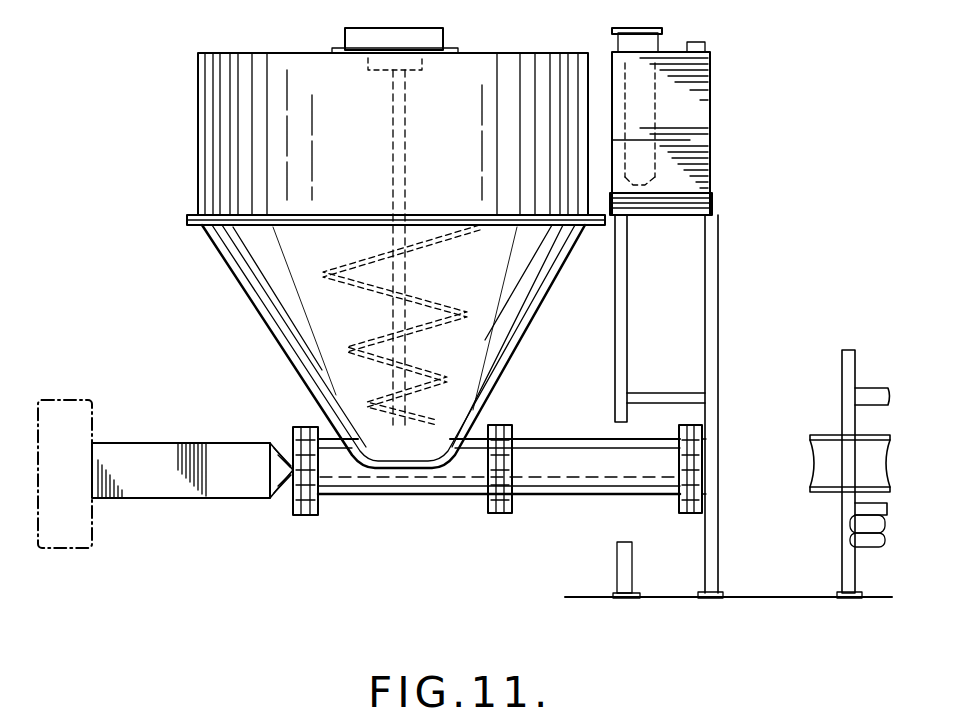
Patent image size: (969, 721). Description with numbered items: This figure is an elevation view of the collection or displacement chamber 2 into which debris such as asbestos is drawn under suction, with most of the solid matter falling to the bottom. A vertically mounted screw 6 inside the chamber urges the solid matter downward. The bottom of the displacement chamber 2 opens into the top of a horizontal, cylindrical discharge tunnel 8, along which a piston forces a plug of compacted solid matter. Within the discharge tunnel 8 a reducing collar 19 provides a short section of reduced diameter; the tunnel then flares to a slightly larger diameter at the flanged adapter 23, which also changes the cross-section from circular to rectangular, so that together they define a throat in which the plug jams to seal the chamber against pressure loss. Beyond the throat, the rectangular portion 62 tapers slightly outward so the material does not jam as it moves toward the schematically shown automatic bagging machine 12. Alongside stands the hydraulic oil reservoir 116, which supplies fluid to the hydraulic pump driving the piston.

The displacement chamber 2 is at (268, 338).
The vertically mounted screw 6 is at (427, 326).
The horizontal discharge tunnel 8 is at (410, 500).
The automatic bagging machine 12 is at (92, 401).
The reducing collar 19 is at (330, 465).
The flanged adapter 23 is at (290, 498).
The rectangular cross-section portion 62 is at (137, 502).
The hydraulic oil reservoir 116 is at (688, 138).